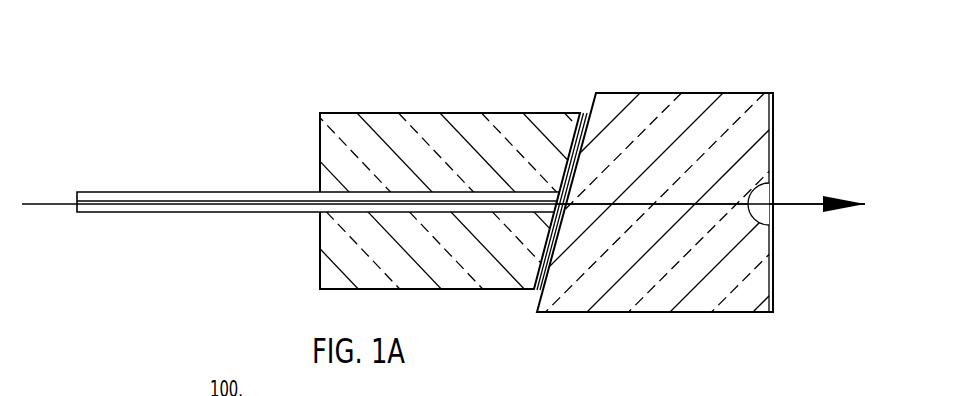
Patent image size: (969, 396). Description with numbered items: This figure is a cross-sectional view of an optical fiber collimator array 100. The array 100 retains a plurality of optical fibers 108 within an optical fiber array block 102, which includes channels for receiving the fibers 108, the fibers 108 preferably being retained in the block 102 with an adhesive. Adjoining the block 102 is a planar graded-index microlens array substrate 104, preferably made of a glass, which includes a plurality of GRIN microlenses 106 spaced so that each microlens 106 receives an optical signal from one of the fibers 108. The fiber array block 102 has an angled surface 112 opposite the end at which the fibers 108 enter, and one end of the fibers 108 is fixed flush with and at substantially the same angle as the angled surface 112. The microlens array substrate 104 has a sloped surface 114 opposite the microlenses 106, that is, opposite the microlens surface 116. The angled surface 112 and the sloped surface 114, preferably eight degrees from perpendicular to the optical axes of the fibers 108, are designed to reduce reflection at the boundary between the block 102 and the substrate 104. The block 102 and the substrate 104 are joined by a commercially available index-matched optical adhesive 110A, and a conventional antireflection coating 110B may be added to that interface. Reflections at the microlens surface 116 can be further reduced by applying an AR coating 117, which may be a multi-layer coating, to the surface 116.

The optical fiber collimator array 100 is at (230, 118).
The optical fiber array block 102 is at (375, 113).
The planar graded-index (GRIN) microlens array substrate 104 is at (644, 313).
The GRIN microlens 106 is at (778, 218).
The optical fiber 108 is at (220, 212).
The index-matched optical adhesive 110A is at (581, 113).
The antireflection (AR) coating 110B is at (585, 113).
The angled surface 112 is at (560, 258).
The sloped surface 114 is at (530, 303).
The microlens surface 116 is at (760, 108).
The AR coating 117 is at (774, 138).